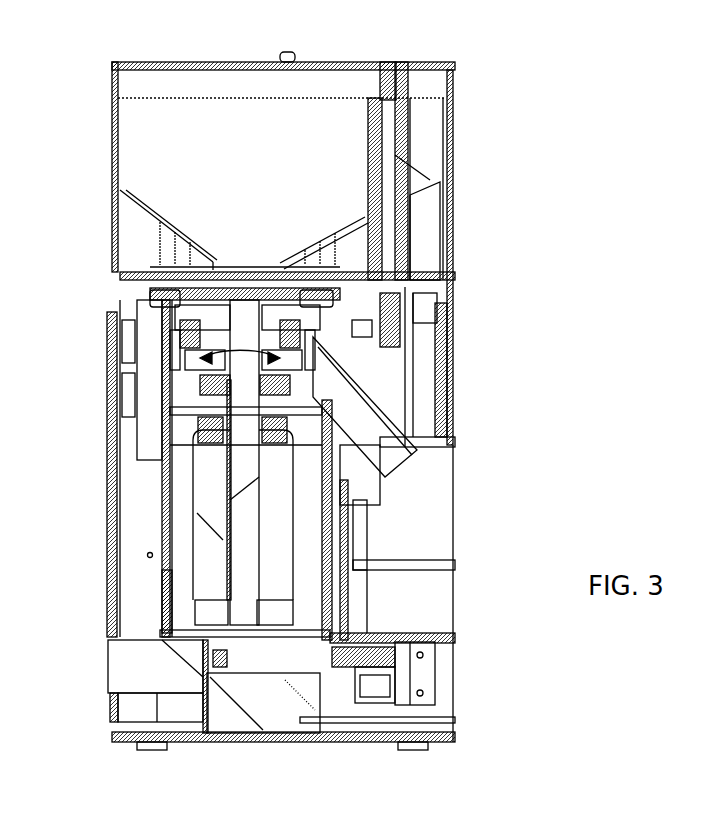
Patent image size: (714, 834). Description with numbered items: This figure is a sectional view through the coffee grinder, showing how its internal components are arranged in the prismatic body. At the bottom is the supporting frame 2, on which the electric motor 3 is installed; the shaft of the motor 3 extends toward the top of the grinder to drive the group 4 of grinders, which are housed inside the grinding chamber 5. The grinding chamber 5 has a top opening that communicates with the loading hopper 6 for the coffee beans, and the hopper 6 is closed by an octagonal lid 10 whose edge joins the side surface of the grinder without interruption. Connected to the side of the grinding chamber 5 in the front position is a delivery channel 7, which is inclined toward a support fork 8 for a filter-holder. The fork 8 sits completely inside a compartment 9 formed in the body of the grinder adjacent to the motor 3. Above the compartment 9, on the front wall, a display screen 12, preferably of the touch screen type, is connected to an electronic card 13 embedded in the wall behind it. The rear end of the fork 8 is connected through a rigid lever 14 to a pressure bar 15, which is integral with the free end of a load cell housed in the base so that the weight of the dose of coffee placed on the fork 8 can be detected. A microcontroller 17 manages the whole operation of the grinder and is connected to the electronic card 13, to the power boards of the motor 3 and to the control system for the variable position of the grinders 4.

The supporting frame 2 is at (145, 583).
The electric motor 3 is at (277, 558).
The group of grinders 4 is at (197, 330).
The grinding chamber 5 is at (308, 335).
The loading hopper 6 is at (260, 147).
The delivery channel 7 is at (365, 433).
The support fork 8 is at (445, 563).
The compartment 9 is at (433, 490).
The lid 10 is at (430, 87).
The display screen 12 is at (440, 387).
The electronic card 13 is at (413, 360).
The rigid lever 14 is at (340, 645).
The pressure bar 15 is at (383, 688).
The microcontroller 17 is at (272, 715).